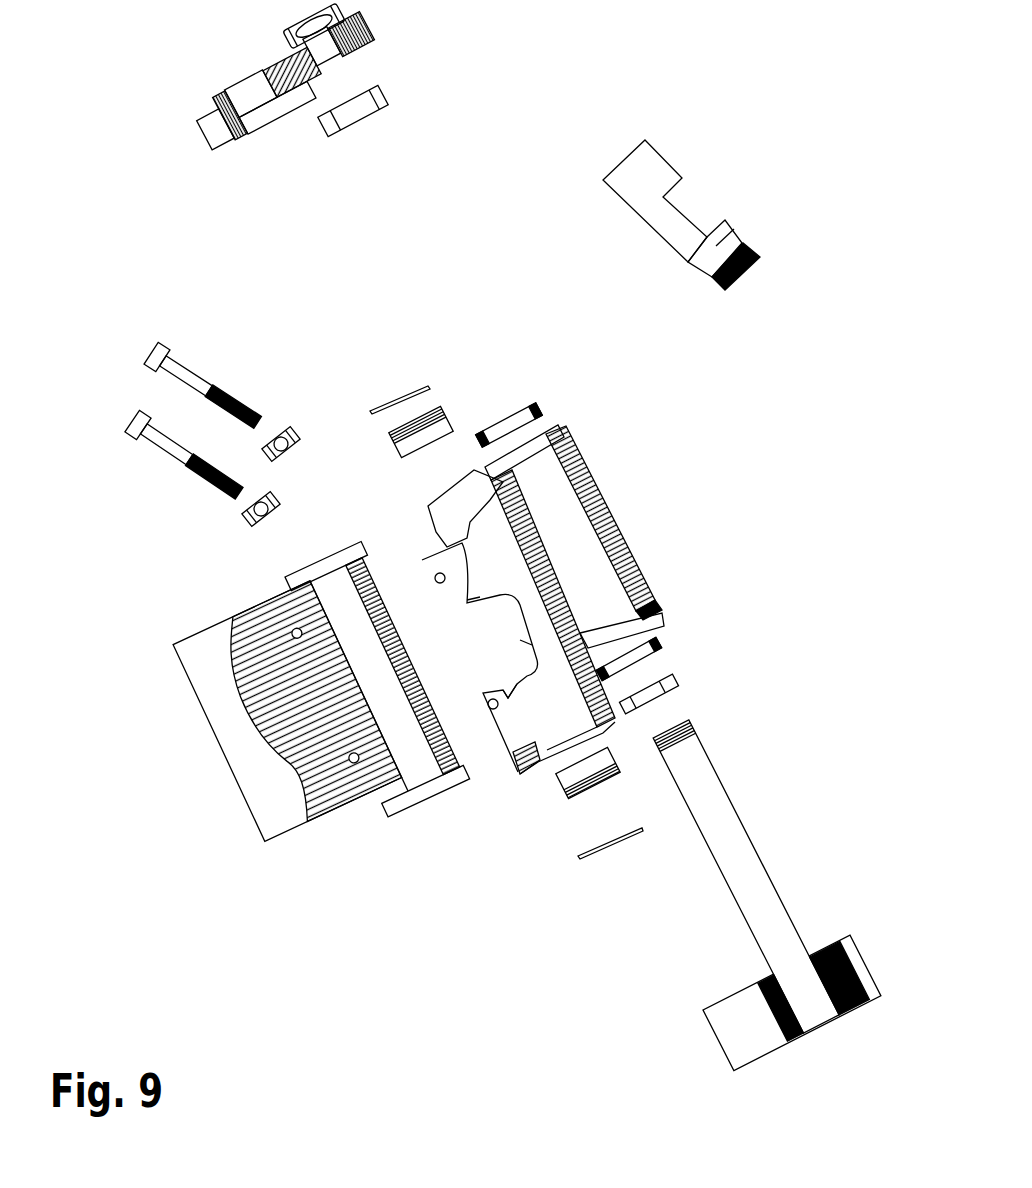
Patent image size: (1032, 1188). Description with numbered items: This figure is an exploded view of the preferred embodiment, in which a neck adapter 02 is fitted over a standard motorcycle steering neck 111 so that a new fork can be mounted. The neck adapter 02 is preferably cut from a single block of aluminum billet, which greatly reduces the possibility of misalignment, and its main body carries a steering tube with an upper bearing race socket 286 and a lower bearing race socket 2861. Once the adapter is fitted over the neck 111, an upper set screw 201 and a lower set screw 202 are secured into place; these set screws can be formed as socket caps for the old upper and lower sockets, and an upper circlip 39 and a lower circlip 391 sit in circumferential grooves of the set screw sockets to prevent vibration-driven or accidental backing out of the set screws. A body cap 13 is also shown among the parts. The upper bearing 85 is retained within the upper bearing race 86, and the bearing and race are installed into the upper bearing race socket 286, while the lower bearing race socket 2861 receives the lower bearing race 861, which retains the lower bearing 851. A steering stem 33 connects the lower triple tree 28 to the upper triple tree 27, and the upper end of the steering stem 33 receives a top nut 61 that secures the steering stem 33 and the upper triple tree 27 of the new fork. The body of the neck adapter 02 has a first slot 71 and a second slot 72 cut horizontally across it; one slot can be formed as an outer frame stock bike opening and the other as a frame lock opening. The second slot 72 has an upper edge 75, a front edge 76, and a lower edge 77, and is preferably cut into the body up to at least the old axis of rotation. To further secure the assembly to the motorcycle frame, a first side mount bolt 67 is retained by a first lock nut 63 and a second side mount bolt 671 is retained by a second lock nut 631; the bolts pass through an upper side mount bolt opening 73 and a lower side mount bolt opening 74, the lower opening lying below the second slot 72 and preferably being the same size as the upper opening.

The neck adapter 02 is at (529, 567).
The body cap 13 is at (662, 158).
The upper triple tree 27 is at (212, 152).
The lower triple tree 28 is at (703, 1010).
The steering stem 33 is at (728, 800).
The upper circlip 39 is at (430, 383).
The lower circlip 391 is at (580, 857).
The top nut 61 is at (288, 35).
The first lock nut 63 is at (290, 427).
The second lock nut 631 is at (247, 522).
The first side mount bolt 67 is at (188, 368).
The second side mount bolt 671 is at (175, 460).
The first slot 71 is at (447, 541).
The second slot 72 is at (459, 657).
The upper side mount bolt opening 73 is at (435, 578).
The lower side mount bolt opening 74 is at (488, 704).
The upper edge 75 is at (468, 603).
The front edge 76 is at (525, 640).
The lower edge 77 is at (505, 688).
The upper bearing 85 is at (380, 97).
The lower bearing 851 is at (677, 678).
The upper bearing race 86 is at (543, 410).
The lower bearing race 861 is at (662, 642).
The standard motorcycle steering neck 111 is at (367, 795).
The upper set screw 201 is at (450, 407).
The lower set screw 202 is at (565, 795).
The upper bearing race socket 286 is at (553, 430).
The lower bearing race socket 2861 is at (662, 607).